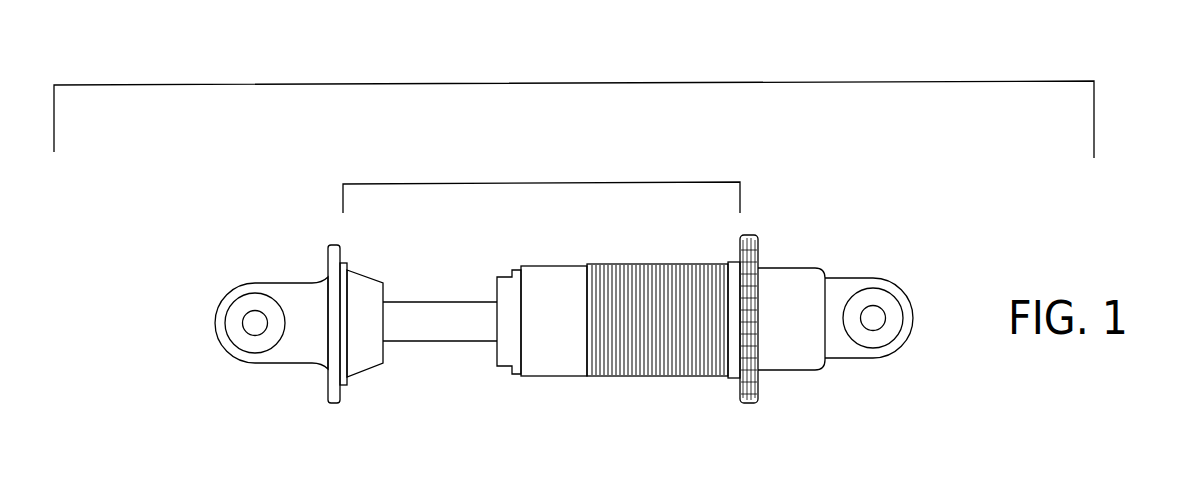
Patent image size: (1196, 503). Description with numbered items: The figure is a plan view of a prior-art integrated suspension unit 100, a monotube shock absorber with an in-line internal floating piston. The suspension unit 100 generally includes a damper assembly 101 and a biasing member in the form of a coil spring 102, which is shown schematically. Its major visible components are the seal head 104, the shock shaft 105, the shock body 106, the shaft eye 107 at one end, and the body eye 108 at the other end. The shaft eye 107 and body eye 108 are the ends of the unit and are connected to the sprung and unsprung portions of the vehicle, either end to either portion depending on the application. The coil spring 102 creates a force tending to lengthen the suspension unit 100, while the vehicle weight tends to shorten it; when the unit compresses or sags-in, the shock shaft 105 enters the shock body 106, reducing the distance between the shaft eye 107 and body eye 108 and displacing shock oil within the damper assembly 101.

The integrated suspension unit 100 is at (470, 82).
The damper assembly 101 is at (806, 264).
The spring 102 is at (450, 180).
The seal head 104 is at (512, 272).
The shock shaft 105 is at (452, 344).
The shock body 106 is at (558, 378).
The shaft eye 107 is at (300, 366).
The body eye 108 is at (905, 286).